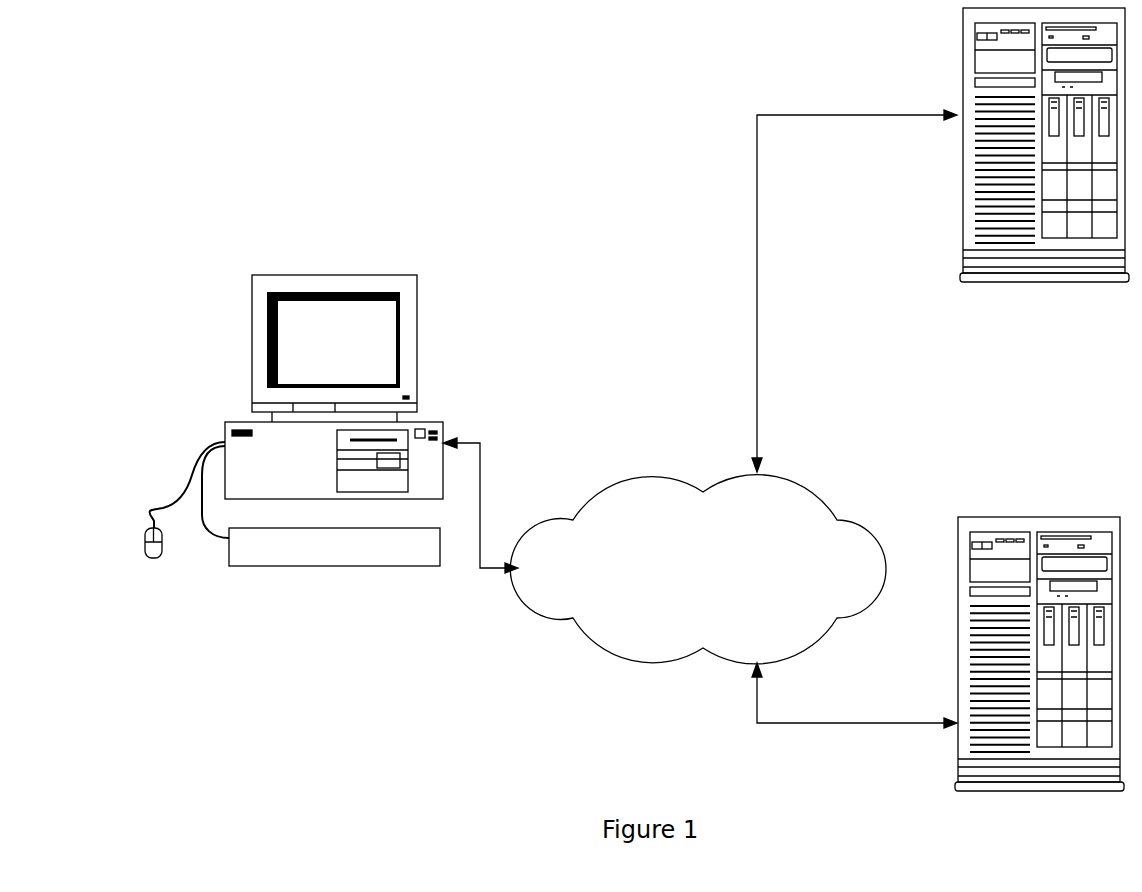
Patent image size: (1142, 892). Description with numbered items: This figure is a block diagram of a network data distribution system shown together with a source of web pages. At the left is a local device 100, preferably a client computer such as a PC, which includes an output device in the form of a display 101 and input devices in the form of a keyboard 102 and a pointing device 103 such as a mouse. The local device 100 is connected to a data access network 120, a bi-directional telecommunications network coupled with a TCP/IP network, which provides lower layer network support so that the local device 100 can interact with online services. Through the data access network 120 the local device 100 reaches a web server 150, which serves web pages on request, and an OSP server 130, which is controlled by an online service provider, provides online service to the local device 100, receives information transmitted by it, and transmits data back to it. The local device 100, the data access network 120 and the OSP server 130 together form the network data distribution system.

The local device 100 is at (250, 418).
The display 101 is at (252, 312).
The keyboard 102 is at (229, 560).
The pointing device 103 is at (143, 537).
The data access network 120 is at (698, 569).
The OSP server 130 is at (1039, 686).
The web server 150 is at (1046, 173).